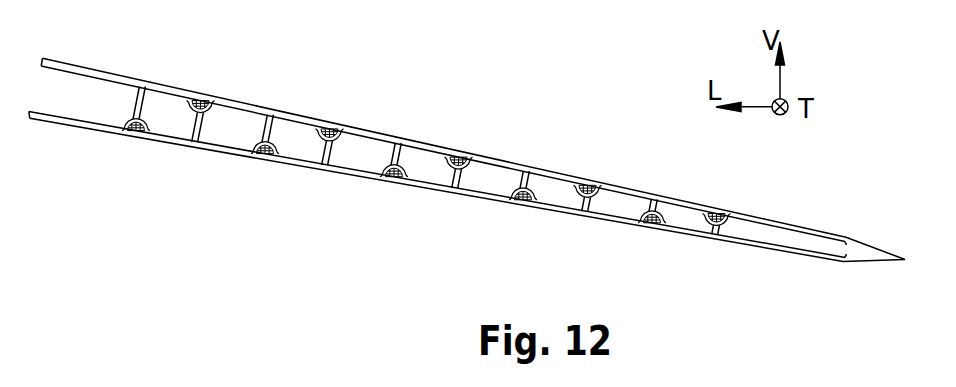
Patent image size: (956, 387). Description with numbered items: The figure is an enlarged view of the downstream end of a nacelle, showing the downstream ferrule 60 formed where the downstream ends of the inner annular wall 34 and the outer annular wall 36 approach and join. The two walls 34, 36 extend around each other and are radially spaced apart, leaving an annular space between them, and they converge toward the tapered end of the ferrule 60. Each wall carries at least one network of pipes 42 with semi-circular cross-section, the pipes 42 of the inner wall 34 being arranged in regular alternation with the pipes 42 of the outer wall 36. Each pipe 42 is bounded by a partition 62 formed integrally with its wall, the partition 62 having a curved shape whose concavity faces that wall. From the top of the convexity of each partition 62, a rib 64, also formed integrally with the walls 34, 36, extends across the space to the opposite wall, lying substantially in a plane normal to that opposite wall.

The inner annular wall 34 is at (612, 223).
The outer annular wall 36 is at (502, 158).
The pipes 42 is at (204, 101).
The downstream ferrule 60 is at (620, 154).
The partition 62 is at (359, 148).
The rib 64 is at (134, 100).